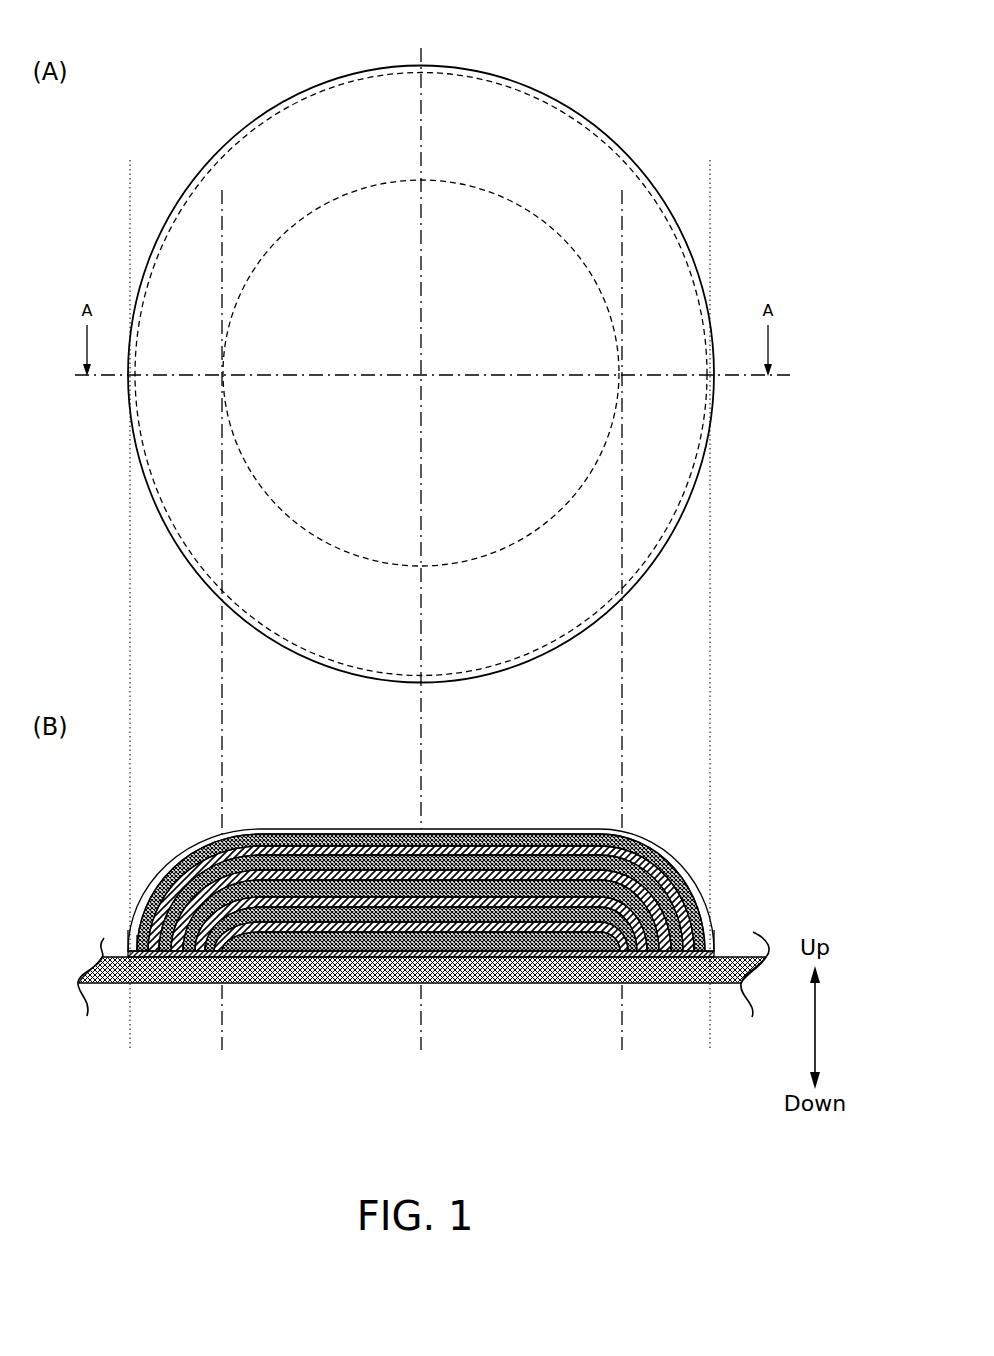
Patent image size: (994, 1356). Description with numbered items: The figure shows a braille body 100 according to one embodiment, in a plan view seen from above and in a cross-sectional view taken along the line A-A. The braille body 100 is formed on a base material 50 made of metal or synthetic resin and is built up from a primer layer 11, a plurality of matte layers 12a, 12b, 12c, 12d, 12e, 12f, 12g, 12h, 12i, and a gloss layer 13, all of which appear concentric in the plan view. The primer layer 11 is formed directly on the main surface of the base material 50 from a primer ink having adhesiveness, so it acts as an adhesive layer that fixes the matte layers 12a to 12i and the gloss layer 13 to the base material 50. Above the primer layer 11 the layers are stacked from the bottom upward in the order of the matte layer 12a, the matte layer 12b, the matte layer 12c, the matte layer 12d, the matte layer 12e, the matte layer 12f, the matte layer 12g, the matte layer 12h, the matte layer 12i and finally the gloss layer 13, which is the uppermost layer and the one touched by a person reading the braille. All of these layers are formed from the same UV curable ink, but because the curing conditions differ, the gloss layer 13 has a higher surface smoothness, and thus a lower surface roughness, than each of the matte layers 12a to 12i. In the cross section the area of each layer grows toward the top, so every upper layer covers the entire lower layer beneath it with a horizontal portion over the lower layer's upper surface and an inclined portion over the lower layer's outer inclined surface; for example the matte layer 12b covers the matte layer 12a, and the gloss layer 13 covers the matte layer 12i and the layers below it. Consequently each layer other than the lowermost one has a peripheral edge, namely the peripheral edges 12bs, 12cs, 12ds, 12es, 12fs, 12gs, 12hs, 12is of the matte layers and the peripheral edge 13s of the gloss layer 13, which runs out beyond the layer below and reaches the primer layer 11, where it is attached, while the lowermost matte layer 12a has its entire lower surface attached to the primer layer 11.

The braille body 100 is at (623, 98).
The primer layer 11 is at (446, 984).
The base material 50 is at (512, 984).
The matte layer 12a is at (460, 568).
The matte layer 12b is at (279, 950).
The matte layer 12c is at (242, 940).
The matte layer 12d is at (347, 882).
The matte layer 12e is at (137, 898).
The matte layer 12f is at (150, 884).
The matte layer 12g is at (163, 874).
The matte layer 12h is at (196, 856).
The matte layer 12i is at (587, 630).
The gloss layer 13 is at (665, 548).
The peripheral edge 13s is at (128, 950).
The peripheral edge 12is is at (129, 954).
The peripheral edge 12hs is at (693, 954).
The peripheral edge 12gs is at (159, 954).
The peripheral edge 12fs is at (671, 954).
The peripheral edge 12es is at (172, 954).
The peripheral edge 12ds is at (647, 954).
The peripheral edge 12cs is at (204, 954).
The peripheral edge 12bs is at (628, 954).